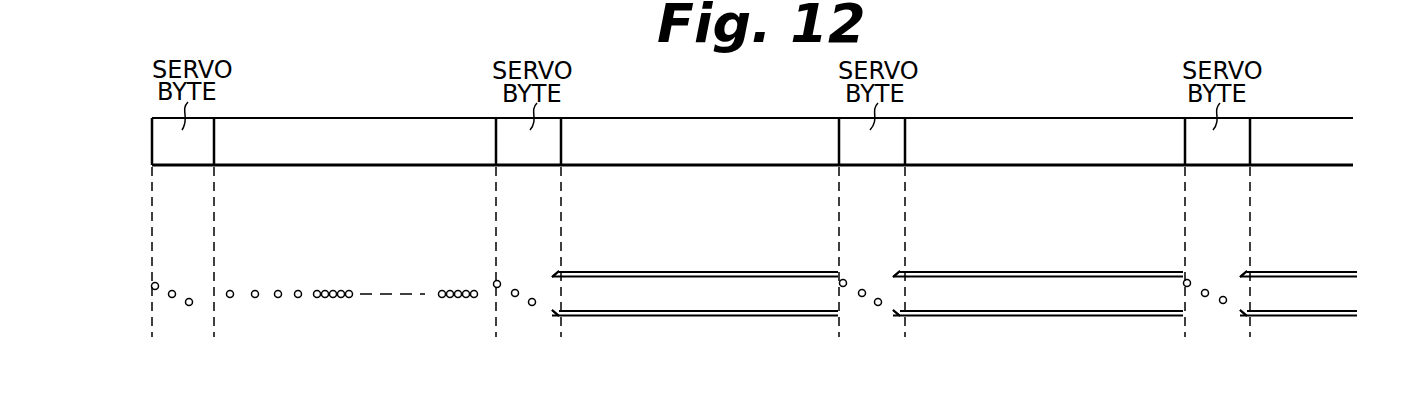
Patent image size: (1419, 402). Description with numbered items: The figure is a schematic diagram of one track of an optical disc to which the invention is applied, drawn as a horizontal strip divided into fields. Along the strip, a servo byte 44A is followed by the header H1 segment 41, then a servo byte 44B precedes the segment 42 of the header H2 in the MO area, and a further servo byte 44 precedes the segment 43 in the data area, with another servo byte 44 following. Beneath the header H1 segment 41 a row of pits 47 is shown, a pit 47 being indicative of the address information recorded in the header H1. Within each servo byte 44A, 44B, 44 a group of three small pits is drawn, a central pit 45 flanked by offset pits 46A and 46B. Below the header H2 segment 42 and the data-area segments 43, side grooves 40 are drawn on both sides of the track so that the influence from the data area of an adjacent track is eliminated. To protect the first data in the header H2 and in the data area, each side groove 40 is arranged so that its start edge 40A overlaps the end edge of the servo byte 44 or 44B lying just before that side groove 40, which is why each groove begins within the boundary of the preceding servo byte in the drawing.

The side groove 40 is at (713, 271).
The start edge of the side groove 40A is at (552, 276).
The header H1 41 is at (380, 165).
The segment of the header H2 42 is at (718, 166).
The segment in the data area 43 is at (1067, 166).
The servo byte 44 is at (1216, 181).
The servo byte 44A is at (180, 167).
The servo byte 44B is at (527, 167).
The servo pit (center) 45 is at (171, 298).
The servo pit (wobble A) 46A is at (155, 282).
The servo pit (wobble B) 46B is at (189, 306).
The pit 47 is at (265, 304).